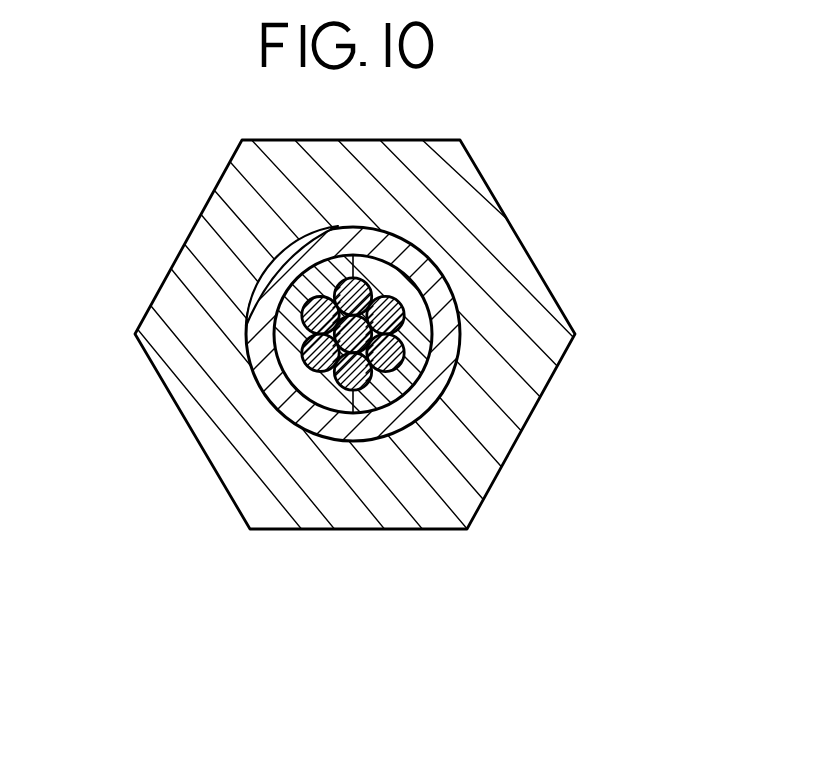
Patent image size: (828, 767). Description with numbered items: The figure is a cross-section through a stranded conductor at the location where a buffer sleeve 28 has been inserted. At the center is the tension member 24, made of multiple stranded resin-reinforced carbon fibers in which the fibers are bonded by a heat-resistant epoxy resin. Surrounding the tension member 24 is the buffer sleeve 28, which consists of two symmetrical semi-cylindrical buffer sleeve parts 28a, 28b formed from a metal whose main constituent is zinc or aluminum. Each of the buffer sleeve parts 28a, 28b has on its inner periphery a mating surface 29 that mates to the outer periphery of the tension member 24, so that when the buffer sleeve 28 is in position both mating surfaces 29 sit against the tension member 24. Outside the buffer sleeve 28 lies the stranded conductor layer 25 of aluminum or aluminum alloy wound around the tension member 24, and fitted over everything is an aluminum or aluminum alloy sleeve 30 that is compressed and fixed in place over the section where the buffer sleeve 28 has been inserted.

The tension member 24 is at (405, 353).
The stranded conductor layer 25 is at (443, 290).
The buffer sleeve 28 is at (444, 457).
The buffer sleeve part 28a is at (328, 398).
The buffer sleeve part 28b is at (375, 398).
The mating surface 29 is at (412, 386).
The sleeve 30 is at (235, 450).